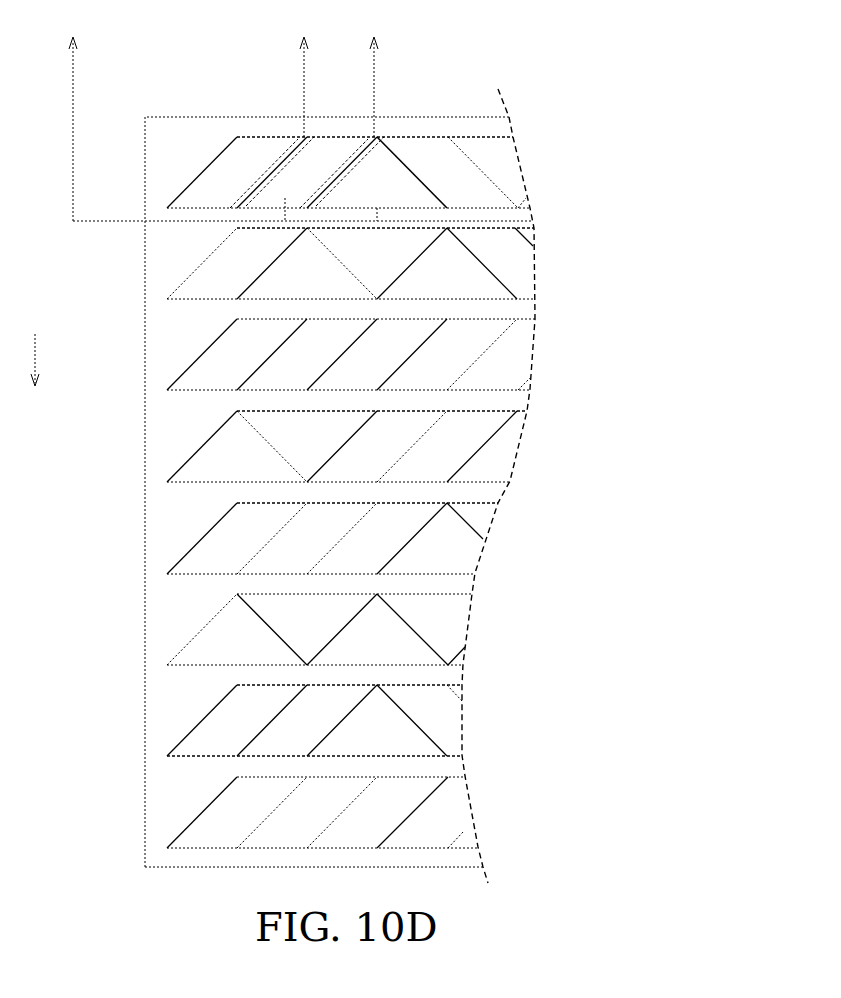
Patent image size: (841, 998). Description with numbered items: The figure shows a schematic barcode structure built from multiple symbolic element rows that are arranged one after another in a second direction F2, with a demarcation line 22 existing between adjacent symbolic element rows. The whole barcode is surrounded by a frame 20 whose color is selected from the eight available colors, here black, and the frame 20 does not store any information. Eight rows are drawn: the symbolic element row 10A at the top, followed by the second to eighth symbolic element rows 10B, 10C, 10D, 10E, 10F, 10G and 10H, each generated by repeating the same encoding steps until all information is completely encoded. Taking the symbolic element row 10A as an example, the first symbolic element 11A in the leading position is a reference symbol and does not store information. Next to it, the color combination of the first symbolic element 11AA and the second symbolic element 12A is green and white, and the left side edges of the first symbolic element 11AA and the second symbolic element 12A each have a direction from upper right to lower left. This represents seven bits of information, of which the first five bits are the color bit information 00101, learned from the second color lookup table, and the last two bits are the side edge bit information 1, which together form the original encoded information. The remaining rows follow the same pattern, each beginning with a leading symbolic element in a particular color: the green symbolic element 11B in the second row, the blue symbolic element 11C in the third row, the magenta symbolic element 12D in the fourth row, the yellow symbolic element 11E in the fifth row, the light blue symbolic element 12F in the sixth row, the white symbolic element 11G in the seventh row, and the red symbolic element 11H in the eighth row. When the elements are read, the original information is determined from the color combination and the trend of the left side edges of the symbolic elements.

The color bit information 00101 is at (72, 114).
The side edge bit information 1 is at (339, 72).
The second direction F2 is at (35, 347).
The frame 20 is at (145, 485).
The demarcation line 22 is at (535, 220).
The symbolic element row 10A is at (513, 170).
The second symbolic element row 10B is at (533, 262).
The third symbolic element row 10C is at (529, 355).
The fourth symbolic element row 10D is at (512, 447).
The fifth symbolic element row 10E is at (484, 528).
The sixth symbolic element row 10F is at (466, 625).
The seventh symbolic element row 10G is at (462, 720).
The eighth symbolic element row 10H is at (467, 805).
The first symbolic element 11A is at (253, 143).
The first symbolic element 11AA is at (337, 143).
The second symbolic element 12A is at (400, 165).
The first symbolic element of second row 11B is at (197, 272).
The first symbolic element of third row 11C is at (197, 365).
The second symbolic element of fourth row 12D is at (197, 455).
The first symbolic element of fifth row 11E is at (197, 544).
The second symbolic element of sixth row 12F is at (197, 634).
The first symbolic element of seventh row 11G is at (197, 725).
The first symbolic element of eighth row 11H is at (197, 820).